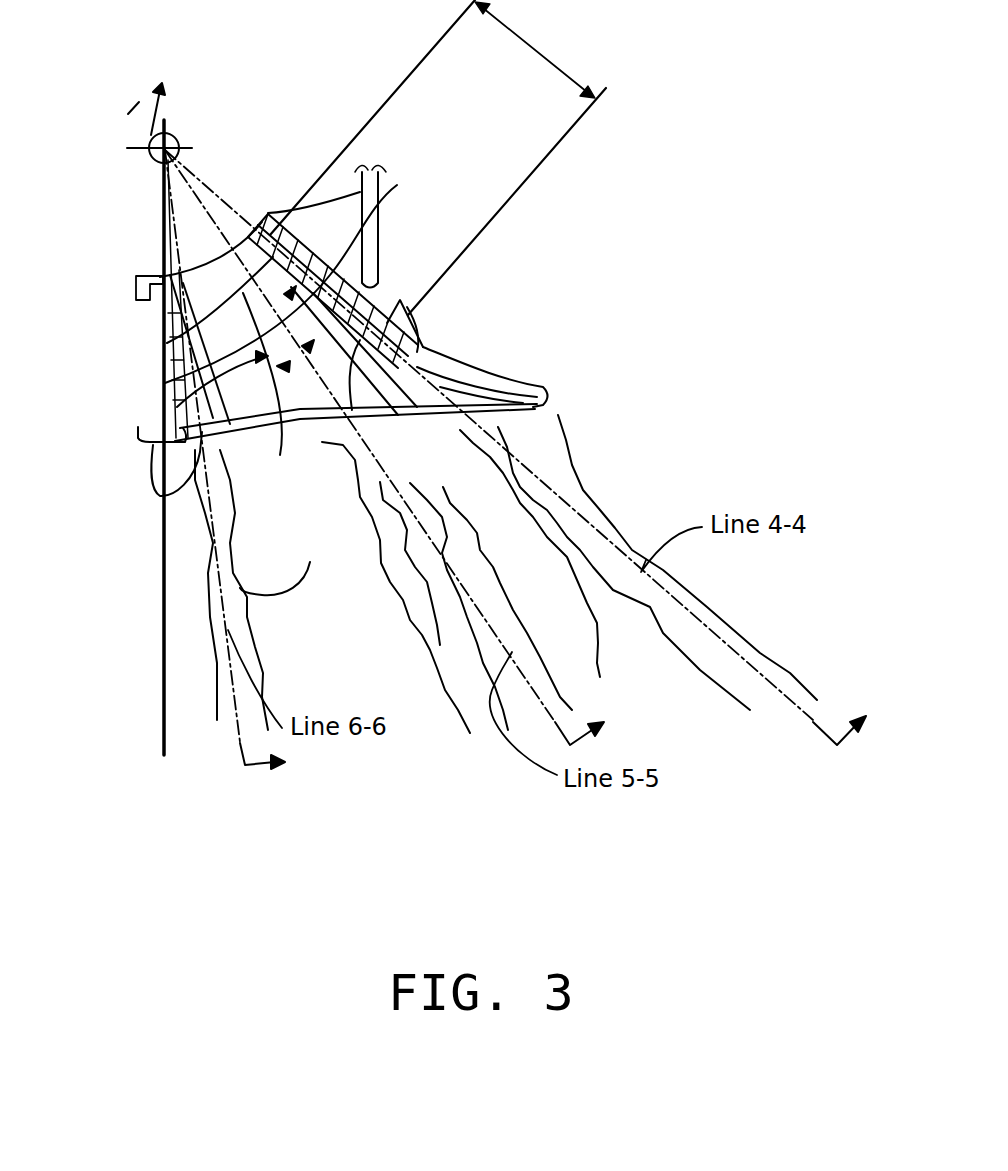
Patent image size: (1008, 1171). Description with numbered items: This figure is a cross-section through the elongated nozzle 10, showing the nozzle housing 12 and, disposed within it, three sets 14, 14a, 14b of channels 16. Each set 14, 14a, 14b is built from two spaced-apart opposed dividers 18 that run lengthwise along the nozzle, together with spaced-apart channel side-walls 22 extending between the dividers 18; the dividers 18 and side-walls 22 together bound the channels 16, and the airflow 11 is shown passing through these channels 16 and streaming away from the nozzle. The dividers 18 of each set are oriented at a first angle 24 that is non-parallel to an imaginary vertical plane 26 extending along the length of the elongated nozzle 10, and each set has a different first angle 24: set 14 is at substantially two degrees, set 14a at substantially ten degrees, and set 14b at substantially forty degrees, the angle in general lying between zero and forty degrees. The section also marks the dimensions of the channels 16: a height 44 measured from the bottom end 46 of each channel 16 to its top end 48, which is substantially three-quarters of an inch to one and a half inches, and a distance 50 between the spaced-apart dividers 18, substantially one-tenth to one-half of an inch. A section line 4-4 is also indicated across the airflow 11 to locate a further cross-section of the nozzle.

The bottom bar / section line 4-4 reference 4 is at (531, 447).
The elongated nozzle 10 is at (672, 255).
The airflow 11 is at (565, 478).
The nozzle housing 12 is at (527, 380).
The set of channels 14 is at (140, 438).
The set of channels 14a is at (282, 247).
The set of channels 14b is at (353, 256).
The channels 16 is at (113, 317).
The opposed dividers 18 is at (135, 511).
The channel side-walls 22 is at (233, 262).
The first angle 24 is at (252, 238).
The imaginary vertical plane 26 is at (163, 604).
The height 44 is at (538, 62).
The bottom end 46 is at (397, 428).
The top end 48 is at (222, 262).
The distance 50 is at (278, 430).